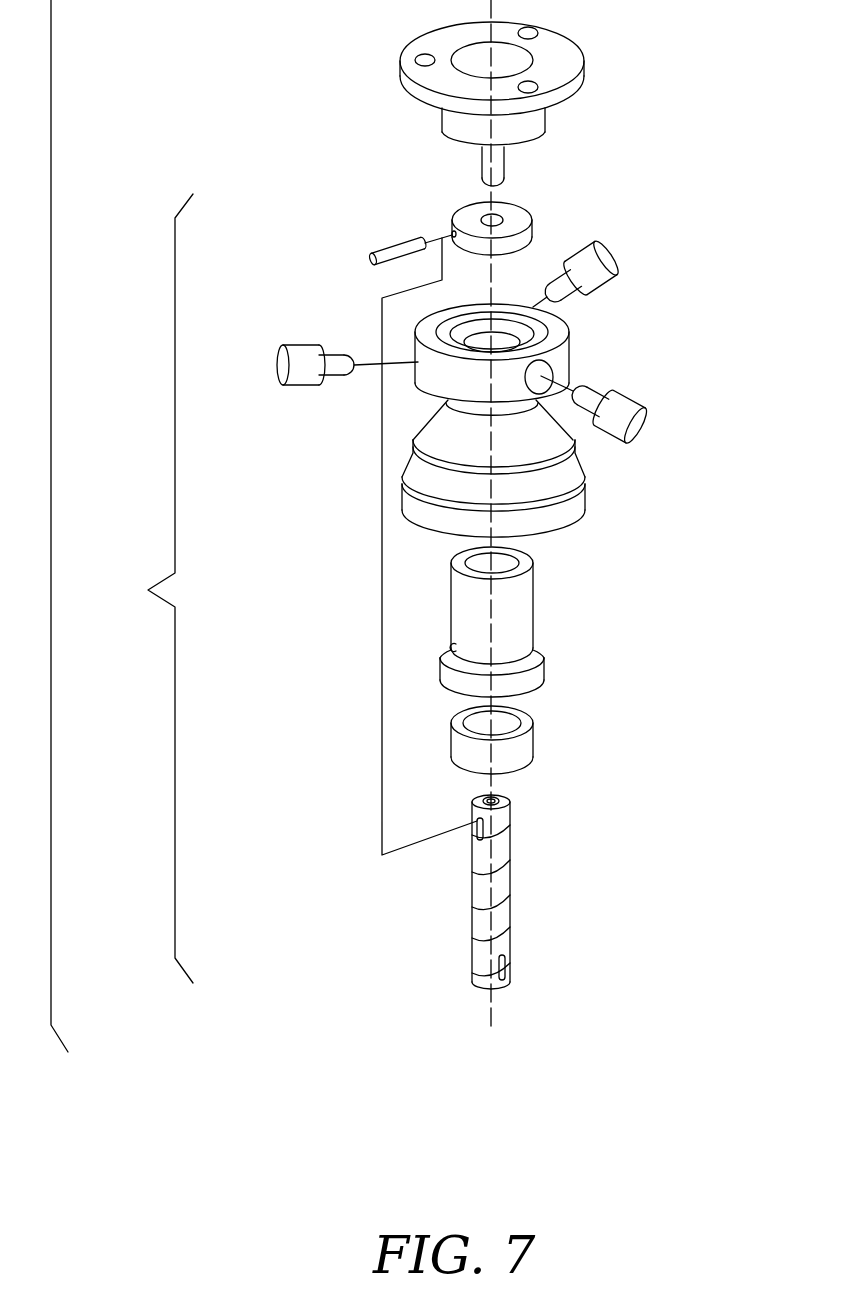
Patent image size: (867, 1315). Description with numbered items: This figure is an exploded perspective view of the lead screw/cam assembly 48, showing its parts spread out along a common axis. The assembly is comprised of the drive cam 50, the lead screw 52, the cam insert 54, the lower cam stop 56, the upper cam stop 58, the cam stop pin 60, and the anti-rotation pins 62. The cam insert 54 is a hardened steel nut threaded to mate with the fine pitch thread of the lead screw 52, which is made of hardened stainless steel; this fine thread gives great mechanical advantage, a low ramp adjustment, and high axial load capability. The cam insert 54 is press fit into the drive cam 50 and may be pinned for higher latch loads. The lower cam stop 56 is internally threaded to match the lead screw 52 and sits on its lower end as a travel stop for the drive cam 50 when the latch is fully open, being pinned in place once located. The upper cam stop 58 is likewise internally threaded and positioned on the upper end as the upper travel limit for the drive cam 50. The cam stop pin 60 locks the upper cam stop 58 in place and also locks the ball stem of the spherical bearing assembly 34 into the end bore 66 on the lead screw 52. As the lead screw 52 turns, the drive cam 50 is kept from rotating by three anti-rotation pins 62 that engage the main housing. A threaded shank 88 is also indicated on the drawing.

The spherical bearing assembly 34 is at (556, 124).
The lead screw/cam assembly 48 is at (292, 588).
The drive cam 50 is at (585, 505).
The lead screw 52 is at (510, 872).
The cam insert 54 is at (533, 607).
The lower cam stop 56 is at (512, 760).
The upper cam stop 58 is at (533, 205).
The cam stop pin 60 is at (395, 244).
The anti-rotation pins 62 is at (277, 370).
The end bore 66 is at (510, 798).
The threaded shank 88 is at (505, 965).